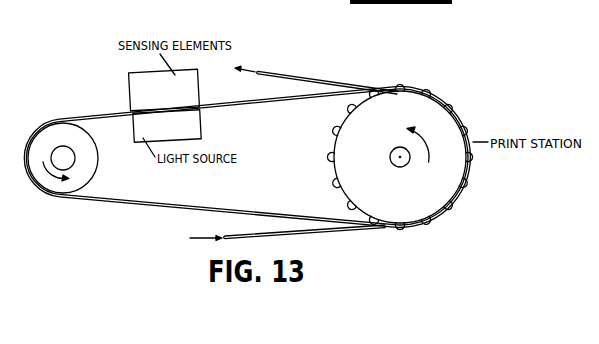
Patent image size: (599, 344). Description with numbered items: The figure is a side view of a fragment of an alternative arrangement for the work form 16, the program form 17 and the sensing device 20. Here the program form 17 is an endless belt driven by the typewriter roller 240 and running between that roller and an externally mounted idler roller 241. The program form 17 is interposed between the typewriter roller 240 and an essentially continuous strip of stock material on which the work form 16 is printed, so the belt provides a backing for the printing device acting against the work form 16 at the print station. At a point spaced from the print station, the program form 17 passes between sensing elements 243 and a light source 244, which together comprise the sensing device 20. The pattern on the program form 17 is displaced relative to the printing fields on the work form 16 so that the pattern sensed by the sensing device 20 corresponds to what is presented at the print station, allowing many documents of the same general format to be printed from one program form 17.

The sensing device 20 is at (247, 148).
The work form 16 is at (300, 61).
The program form 17 is at (160, 201).
The typewriter roller 240 is at (398, 107).
The idler roller 241 is at (53, 135).
The sensing elements 243 is at (199, 88).
The light source 244 is at (197, 127).